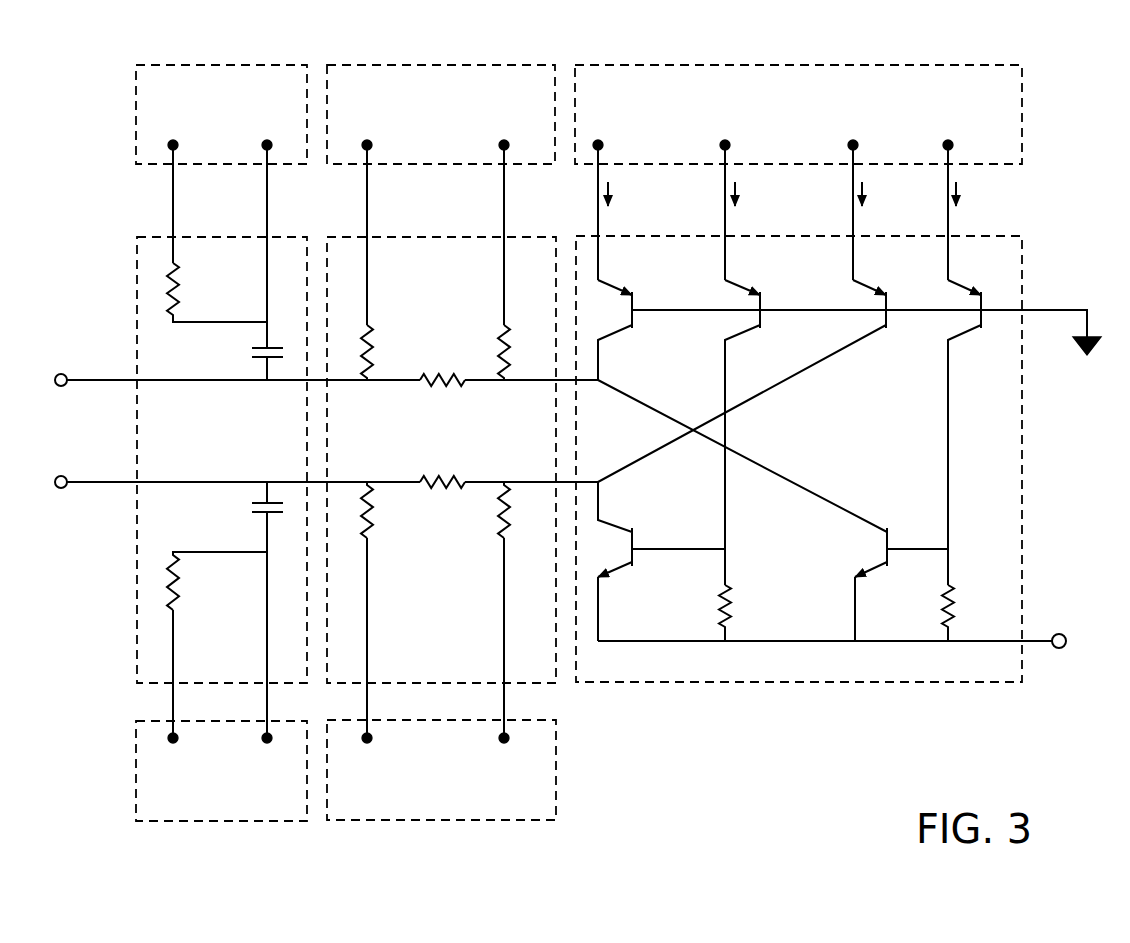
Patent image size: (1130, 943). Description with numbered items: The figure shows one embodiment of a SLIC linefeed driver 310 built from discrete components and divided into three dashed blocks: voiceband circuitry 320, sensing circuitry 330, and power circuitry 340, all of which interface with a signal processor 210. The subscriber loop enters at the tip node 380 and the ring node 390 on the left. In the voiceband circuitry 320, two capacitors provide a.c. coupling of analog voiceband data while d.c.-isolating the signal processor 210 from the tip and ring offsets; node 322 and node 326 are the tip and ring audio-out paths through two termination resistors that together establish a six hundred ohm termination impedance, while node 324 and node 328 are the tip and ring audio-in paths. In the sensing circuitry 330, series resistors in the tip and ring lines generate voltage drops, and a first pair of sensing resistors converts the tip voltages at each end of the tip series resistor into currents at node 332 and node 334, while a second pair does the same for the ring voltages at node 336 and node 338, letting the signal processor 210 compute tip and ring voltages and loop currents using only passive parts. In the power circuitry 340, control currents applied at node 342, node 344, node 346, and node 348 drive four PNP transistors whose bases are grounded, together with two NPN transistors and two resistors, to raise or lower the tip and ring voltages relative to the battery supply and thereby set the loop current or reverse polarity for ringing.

The SLIC linefeed driver 310 is at (81, 154).
The signal processor 210 is at (795, 60).
The voiceband circuitry 320 is at (137, 405).
The node 322 is at (171, 188).
The node 324 is at (267, 231).
The node 326 is at (173, 691).
The node 328 is at (267, 642).
The sensing circuitry 330 is at (550, 683).
The node 332 is at (367, 219).
The node 334 is at (504, 219).
The node 336 is at (365, 655).
The node 338 is at (502, 655).
The power circuitry 340 is at (783, 682).
The node 342 is at (607, 197).
The node 344 is at (734, 197).
The node 346 is at (862, 197).
The node 348 is at (956, 197).
The tip node 380 is at (326, 355).
The ring node 390 is at (322, 511).